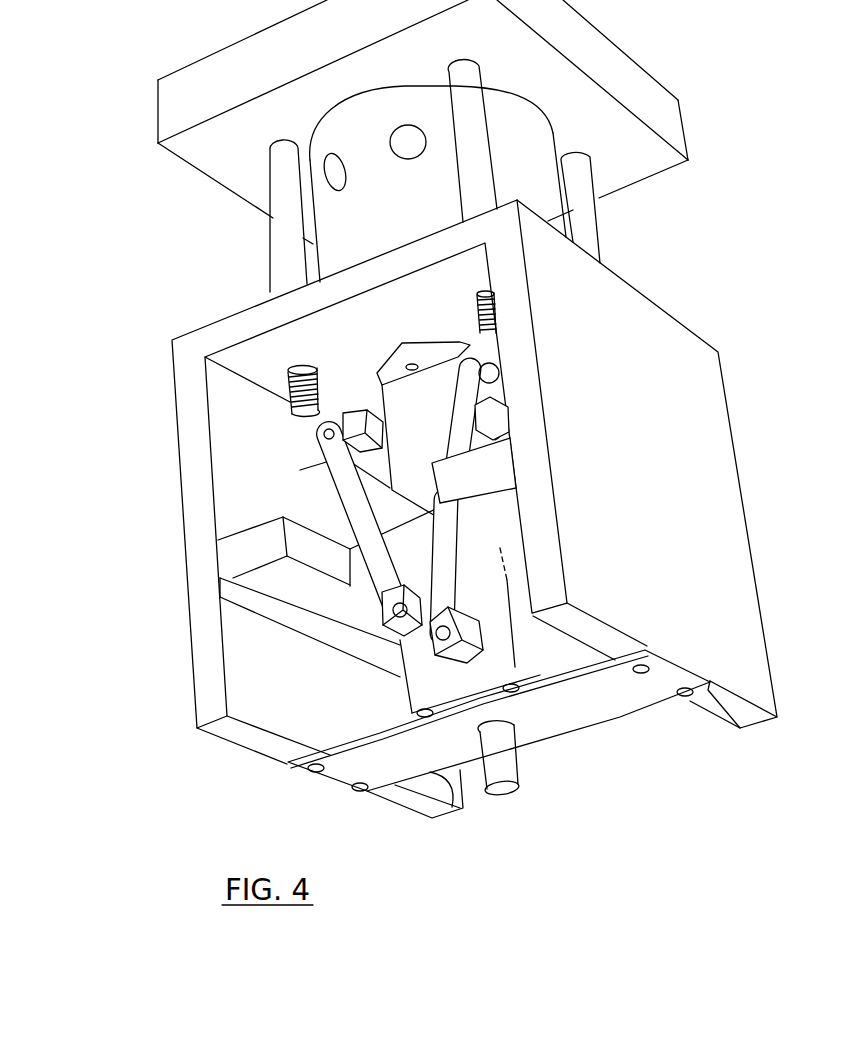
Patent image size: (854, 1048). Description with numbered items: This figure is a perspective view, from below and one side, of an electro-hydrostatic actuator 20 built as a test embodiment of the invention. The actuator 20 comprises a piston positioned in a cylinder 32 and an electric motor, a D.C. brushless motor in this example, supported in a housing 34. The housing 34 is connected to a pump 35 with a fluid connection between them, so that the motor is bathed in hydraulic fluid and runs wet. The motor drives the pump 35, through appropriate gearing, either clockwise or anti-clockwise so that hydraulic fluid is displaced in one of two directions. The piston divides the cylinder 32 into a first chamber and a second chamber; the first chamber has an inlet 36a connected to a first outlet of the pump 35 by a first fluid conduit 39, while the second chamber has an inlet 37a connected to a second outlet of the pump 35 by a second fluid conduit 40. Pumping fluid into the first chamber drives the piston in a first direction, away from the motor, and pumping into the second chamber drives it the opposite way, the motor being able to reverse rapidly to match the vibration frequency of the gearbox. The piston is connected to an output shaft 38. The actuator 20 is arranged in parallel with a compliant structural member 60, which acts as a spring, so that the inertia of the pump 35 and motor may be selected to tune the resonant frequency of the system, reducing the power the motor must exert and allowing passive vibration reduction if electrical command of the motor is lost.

The electro-hydrostatic actuator 20 is at (190, 275).
The cylinder 32 is at (538, 667).
The housing 34 is at (538, 182).
The pump 35 is at (440, 382).
The inlet of first chamber 36a is at (397, 620).
The inlet of second chamber 37a is at (472, 635).
The output shaft 38 is at (505, 777).
The first fluid conduit 39 is at (333, 469).
The second fluid conduit 40 is at (462, 425).
The compliant structural member 60 is at (452, 812).